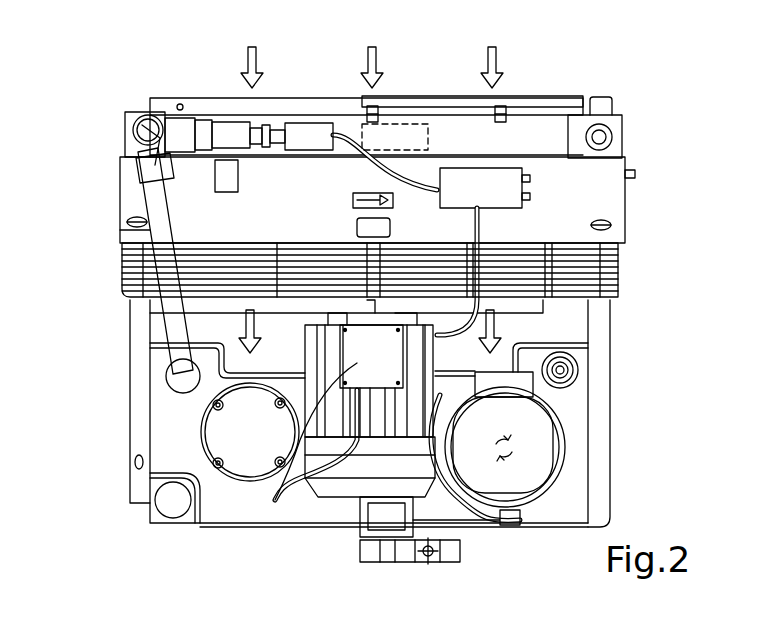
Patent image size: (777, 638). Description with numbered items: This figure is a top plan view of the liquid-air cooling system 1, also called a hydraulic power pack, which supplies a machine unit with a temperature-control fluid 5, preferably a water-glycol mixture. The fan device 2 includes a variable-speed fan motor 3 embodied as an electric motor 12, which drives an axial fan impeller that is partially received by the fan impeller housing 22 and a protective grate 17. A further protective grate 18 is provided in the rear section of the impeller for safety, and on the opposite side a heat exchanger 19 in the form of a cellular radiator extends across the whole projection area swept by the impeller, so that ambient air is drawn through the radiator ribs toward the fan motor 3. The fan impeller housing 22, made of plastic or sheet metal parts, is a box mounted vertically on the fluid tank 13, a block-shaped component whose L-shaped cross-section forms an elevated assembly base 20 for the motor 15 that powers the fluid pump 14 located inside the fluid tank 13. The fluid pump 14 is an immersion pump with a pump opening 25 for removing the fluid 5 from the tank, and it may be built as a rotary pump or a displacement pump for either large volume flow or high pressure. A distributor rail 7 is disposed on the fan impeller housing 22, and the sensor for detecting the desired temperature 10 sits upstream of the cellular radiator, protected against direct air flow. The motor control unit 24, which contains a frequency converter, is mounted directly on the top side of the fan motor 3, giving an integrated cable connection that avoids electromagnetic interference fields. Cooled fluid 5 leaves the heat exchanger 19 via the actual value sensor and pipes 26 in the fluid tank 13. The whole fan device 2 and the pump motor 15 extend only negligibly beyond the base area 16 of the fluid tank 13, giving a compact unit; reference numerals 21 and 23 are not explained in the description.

The liquid-air cooling system 1 is at (660, 324).
The fan device 2 is at (113, 306).
The fan motor 3 is at (345, 495).
The fluid 5 is at (310, 75).
The distributor rail 7 is at (512, 175).
The sensor for detecting the desired temperature 10 is at (695, 476).
The electric motor 12 is at (503, 585).
The fluid tank 13 is at (598, 328).
The fluid pump 14 is at (656, 503).
The motor 15 is at (572, 473).
The base area 16 is at (632, 400).
The protective grate 17 is at (130, 240).
The protective grate 18 is at (125, 268).
The heat exchanger 19 is at (127, 150).
The assembly base 20 is at (212, 530).
The outlet 21 is at (575, 410).
The fan impeller housing 22 is at (610, 206).
The cover plate 23 is at (453, 133).
The motor control unit 24 is at (371, 462).
The pump opening 25 is at (505, 525).
The pipes 26 is at (135, 112).